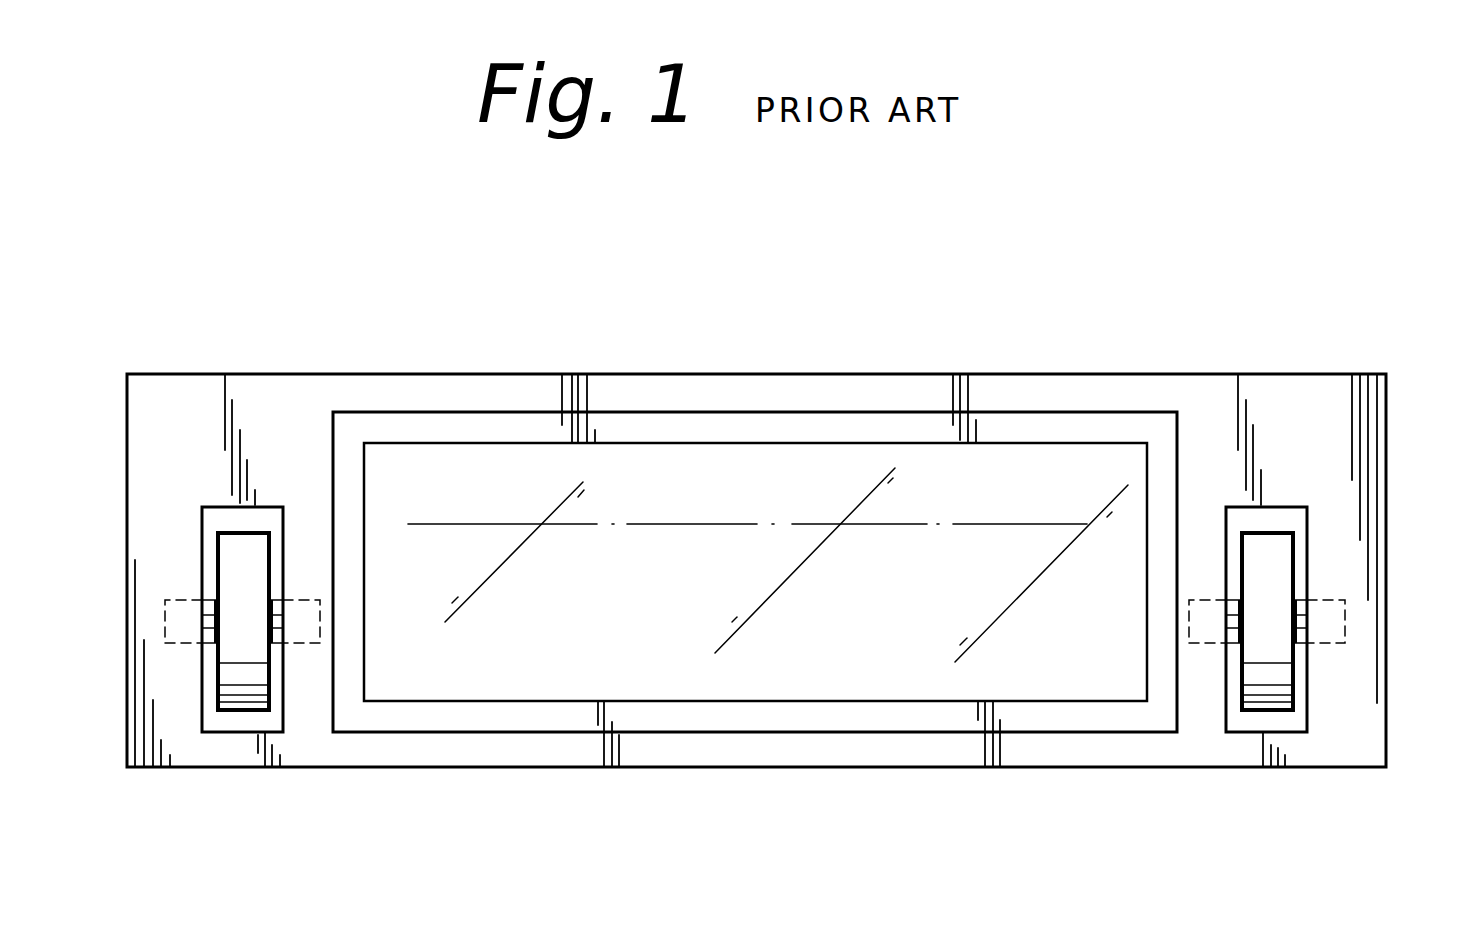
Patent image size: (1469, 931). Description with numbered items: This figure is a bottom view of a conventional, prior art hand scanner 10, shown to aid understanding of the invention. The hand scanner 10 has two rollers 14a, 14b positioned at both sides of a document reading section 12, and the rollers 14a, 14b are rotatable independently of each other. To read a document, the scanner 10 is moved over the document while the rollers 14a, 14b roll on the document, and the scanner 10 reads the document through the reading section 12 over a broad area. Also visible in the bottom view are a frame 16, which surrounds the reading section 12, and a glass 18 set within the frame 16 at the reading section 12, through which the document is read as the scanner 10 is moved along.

The hand scanner 10 is at (1387, 339).
The document reading section 12 is at (698, 523).
The roller 14a is at (243, 700).
The roller 14b is at (1265, 700).
The frame 16 is at (567, 710).
The glass 18 is at (1029, 475).